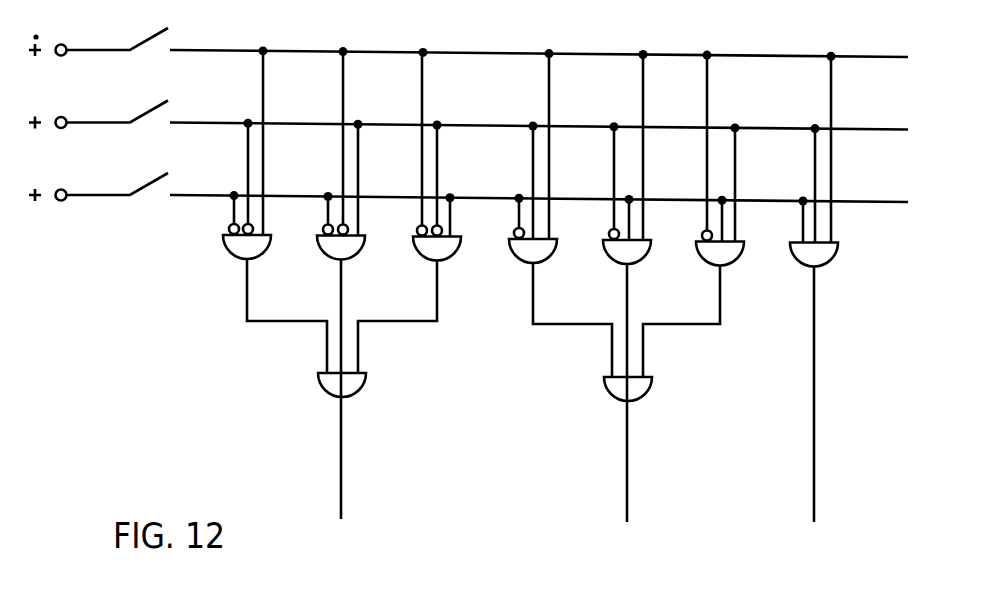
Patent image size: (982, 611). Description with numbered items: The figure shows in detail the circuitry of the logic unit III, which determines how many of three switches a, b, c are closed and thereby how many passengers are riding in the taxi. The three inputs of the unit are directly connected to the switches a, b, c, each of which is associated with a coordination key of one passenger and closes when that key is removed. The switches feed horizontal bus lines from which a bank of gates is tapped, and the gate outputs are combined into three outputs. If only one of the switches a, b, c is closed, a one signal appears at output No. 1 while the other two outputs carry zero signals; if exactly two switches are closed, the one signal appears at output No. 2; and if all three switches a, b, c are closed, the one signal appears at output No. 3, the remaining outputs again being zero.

The switch a is at (468, 45).
The switch b is at (468, 119).
The switch c is at (468, 190).
The output No. 1 is at (342, 303).
The output No. 2 is at (626, 308).
The output No. 3 is at (813, 415).
The unit III is at (842, 310).